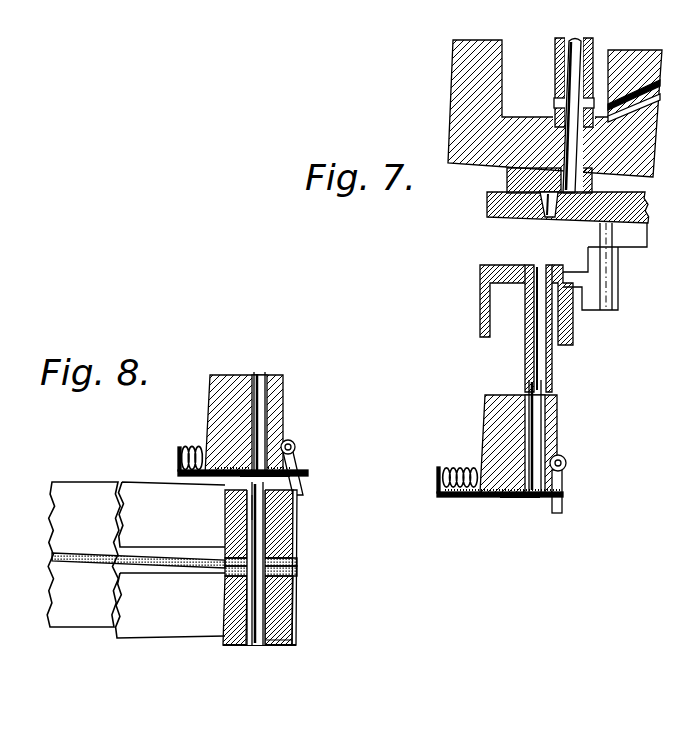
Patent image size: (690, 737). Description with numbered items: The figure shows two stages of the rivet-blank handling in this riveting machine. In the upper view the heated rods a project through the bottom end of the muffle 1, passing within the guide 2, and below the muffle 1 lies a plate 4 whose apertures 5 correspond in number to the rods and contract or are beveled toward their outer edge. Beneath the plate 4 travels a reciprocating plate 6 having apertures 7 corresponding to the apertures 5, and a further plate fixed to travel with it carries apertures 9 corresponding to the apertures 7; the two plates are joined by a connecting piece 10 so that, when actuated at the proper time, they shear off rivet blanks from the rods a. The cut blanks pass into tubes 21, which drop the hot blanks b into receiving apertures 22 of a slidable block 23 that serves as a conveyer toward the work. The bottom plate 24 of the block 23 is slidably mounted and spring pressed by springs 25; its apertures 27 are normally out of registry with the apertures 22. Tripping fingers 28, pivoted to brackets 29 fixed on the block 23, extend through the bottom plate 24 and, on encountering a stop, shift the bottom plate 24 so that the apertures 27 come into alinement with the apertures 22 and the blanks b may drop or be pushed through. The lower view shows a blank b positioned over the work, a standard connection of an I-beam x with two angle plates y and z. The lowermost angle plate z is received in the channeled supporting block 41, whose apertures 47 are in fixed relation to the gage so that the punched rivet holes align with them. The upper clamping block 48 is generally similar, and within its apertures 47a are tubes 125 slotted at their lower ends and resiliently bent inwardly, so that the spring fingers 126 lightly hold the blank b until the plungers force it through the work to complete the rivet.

In FIG. 7, the muffle 1 is at (655, 158).
In FIG. 7, the tube 2 is at (555, 79).
In FIG. 7, the rod a is at (570, 50).
In FIG. 7, the plate 4 is at (507, 181).
In FIG. 7, the aperture 5 is at (599, 186).
In FIG. 7, the plate 6 is at (487, 206).
In FIG. 7, the aperture 7 is at (549, 219).
In FIG. 7, the aperture 9 is at (490, 264).
In FIG. 7, the connecting piece 10 is at (613, 268).
In FIG. 7, the tube 21 is at (526, 358).
In FIG. 7, the slidable block 23 is at (487, 419).
In FIG. 8, the slidable block 23 is at (208, 413).
In FIG. 7, the blank b is at (559, 428).
In FIG. 8, the blank b is at (250, 505).
In FIG. 7, the spring 25 is at (471, 468).
In FIG. 8, the spring 25 is at (187, 447).
In FIG. 7, the bottom plate 24 is at (490, 498).
In FIG. 8, the bottom plate 24 is at (240, 477).
In FIG. 7, the aperture 27 is at (508, 498).
In FIG. 8, the aperture 27 is at (270, 479).
In FIG. 7, the tripping finger 28 is at (565, 484).
In FIG. 8, the tripping finger 28 is at (300, 463).
In FIG. 7, the bracket 29 is at (566, 458).
In FIG. 8, the bracket 29 is at (294, 441).
In FIG. 8, the receiving aperture 22 is at (270, 383).
In FIG. 8, the aperture 47 is at (298, 589).
In FIG. 8, the aperture 47a is at (228, 522).
In FIG. 8, the upper clamping block 48 is at (298, 504).
In FIG. 8, the angle plate y is at (300, 525).
In FIG. 8, the tube 125 is at (298, 545).
In FIG. 8, the spring finger 126 is at (298, 563).
In FIG. 8, the angle plate z is at (297, 616).
In FIG. 8, the supporting block 41 is at (282, 648).
In FIG. 8, the I-beam x is at (62, 557).